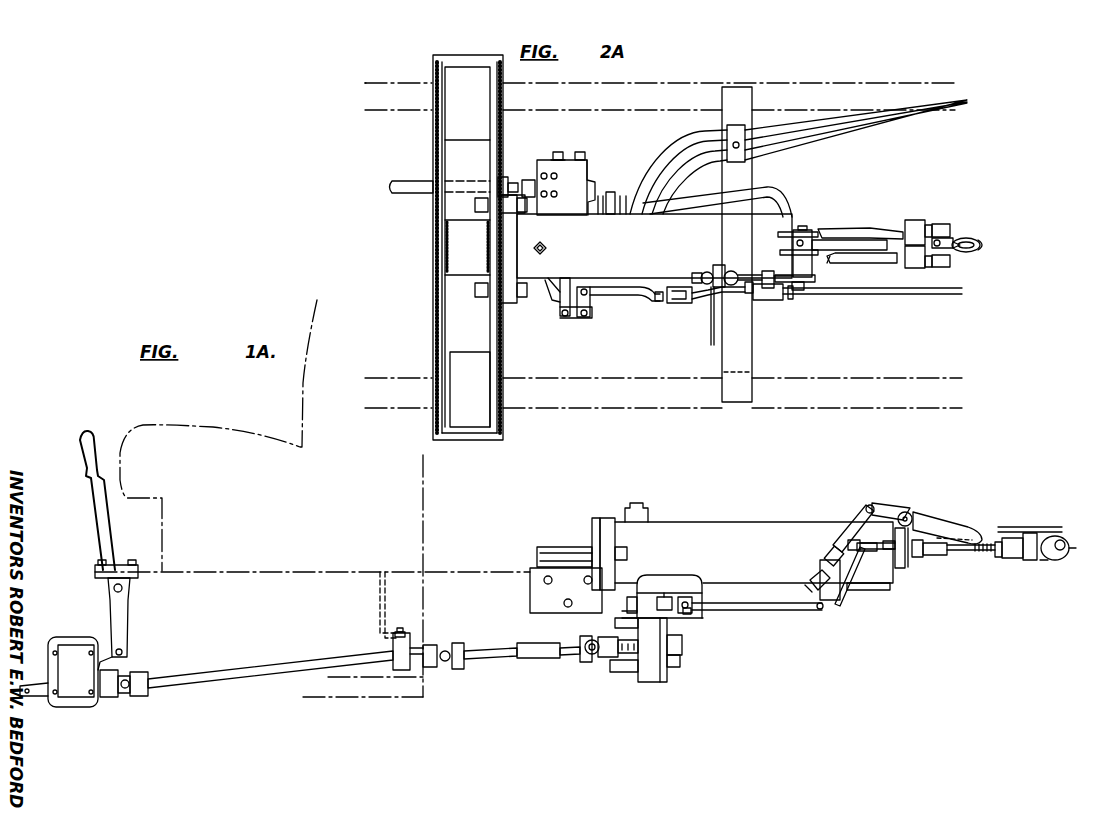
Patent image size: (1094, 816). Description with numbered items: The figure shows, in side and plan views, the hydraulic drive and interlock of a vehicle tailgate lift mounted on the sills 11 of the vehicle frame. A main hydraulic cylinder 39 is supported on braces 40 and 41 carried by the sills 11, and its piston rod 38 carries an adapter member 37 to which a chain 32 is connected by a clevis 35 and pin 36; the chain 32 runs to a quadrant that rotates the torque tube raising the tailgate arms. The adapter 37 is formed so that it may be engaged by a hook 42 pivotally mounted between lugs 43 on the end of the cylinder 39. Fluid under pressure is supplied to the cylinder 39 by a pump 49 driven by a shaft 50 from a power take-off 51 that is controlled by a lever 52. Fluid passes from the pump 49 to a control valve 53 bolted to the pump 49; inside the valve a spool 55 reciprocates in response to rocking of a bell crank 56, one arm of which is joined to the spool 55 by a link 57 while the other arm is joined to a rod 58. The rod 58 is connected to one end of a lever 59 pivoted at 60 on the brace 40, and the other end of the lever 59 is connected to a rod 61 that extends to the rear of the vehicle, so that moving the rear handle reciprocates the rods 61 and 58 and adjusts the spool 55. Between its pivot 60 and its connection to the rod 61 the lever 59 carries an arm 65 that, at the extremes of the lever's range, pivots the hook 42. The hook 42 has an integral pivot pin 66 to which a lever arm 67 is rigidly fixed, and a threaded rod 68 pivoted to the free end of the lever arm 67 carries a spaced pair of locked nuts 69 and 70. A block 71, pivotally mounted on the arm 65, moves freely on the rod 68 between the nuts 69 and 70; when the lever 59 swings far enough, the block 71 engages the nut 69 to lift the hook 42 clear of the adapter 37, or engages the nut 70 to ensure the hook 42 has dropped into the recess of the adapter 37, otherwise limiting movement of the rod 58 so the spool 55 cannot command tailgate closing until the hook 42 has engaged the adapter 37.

In FIG. 2A, the sills 11 is at (700, 86).
In FIG. 2A, the chain 32 is at (982, 243).
In FIG. 1A, the chain 32 is at (1058, 536).
In FIG. 2A, the clevis 35 is at (972, 252).
In FIG. 1A, the clevis 35 is at (1040, 562).
In FIG. 2A, the pin 36 is at (966, 238).
In FIG. 1A, the pin 36 is at (1030, 532).
In FIG. 2A, the adapter member 37 is at (955, 216).
In FIG. 1A, the adapter member 37 is at (1015, 560).
In FIG. 2A, the piston rod 38 is at (836, 242).
In FIG. 1A, the piston rod 38 is at (958, 558).
In FIG. 2A, the main hydraulic cylinder 39 is at (622, 200).
In FIG. 1A, the main hydraulic cylinder 39 is at (793, 520).
In FIG. 2A, the brace 40 is at (745, 342).
In FIG. 1A, the brace 40 is at (870, 553).
In FIG. 2A, the brace 41 is at (455, 335).
In FIG. 1A, the brace 41 is at (537, 599).
In FIG. 2A, the hook 42 is at (872, 230).
In FIG. 1A, the hook 42 is at (950, 527).
In FIG. 2A, the lugs 43 is at (806, 234).
In FIG. 2A, the pump 49 is at (596, 168).
In FIG. 1A, the pump 49 is at (654, 684).
In FIG. 2A, the shaft 50 is at (410, 182).
In FIG. 1A, the shaft 50 is at (262, 670).
In FIG. 1A, the power take-off 51 is at (82, 641).
In FIG. 1A, the lever 52 is at (103, 528).
In FIG. 1A, the control valve 53 is at (668, 576).
In FIG. 2A, the spool 55 is at (566, 283).
In FIG. 2A, the bell crank 56 is at (584, 318).
In FIG. 1A, the bell crank 56 is at (692, 594).
In FIG. 2A, the link 57 is at (551, 308).
In FIG. 2A, the rod 58 is at (618, 302).
In FIG. 1A, the rod 58 is at (775, 612).
In FIG. 2A, the lever 59 is at (694, 304).
In FIG. 1A, the lever 59 is at (895, 560).
In FIG. 1A, the pivot 60 is at (858, 560).
In FIG. 2A, the rod 61 is at (962, 296).
In FIG. 1A, the rod 61 is at (1020, 526).
In FIG. 2A, the arm 65 is at (712, 330).
In FIG. 1A, the arm 65 is at (860, 585).
In FIG. 2A, the pivot pin 66 is at (836, 263).
In FIG. 1A, the pivot pin 66 is at (912, 512).
In FIG. 2A, the lever arm 67 is at (806, 290).
In FIG. 1A, the lever arm 67 is at (875, 506).
In FIG. 2A, the rod 68 is at (795, 220).
In FIG. 1A, the rod 68 is at (838, 540).
In FIG. 2A, the nut 69 is at (700, 272).
In FIG. 1A, the nut 69 is at (810, 582).
In FIG. 2A, the nut 70 is at (735, 270).
In FIG. 1A, the nut 70 is at (832, 560).
In FIG. 2A, the block 71 is at (718, 264).